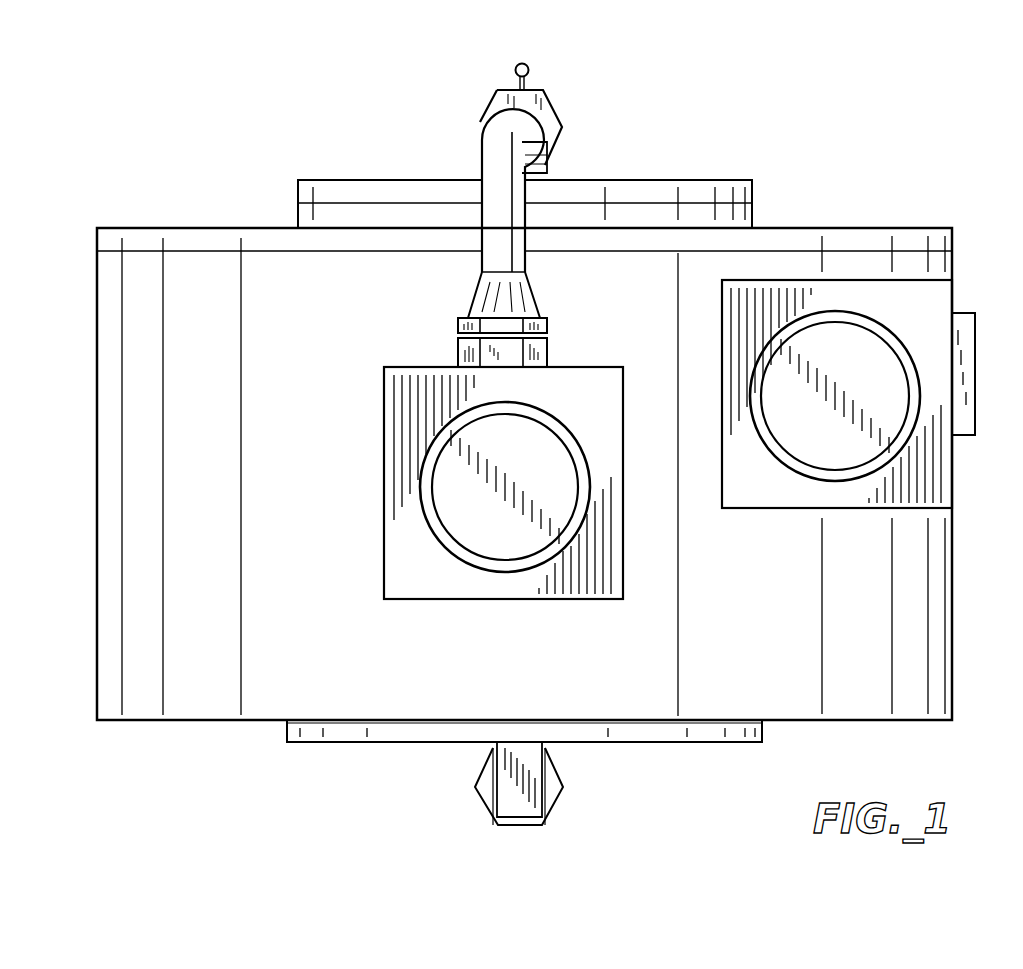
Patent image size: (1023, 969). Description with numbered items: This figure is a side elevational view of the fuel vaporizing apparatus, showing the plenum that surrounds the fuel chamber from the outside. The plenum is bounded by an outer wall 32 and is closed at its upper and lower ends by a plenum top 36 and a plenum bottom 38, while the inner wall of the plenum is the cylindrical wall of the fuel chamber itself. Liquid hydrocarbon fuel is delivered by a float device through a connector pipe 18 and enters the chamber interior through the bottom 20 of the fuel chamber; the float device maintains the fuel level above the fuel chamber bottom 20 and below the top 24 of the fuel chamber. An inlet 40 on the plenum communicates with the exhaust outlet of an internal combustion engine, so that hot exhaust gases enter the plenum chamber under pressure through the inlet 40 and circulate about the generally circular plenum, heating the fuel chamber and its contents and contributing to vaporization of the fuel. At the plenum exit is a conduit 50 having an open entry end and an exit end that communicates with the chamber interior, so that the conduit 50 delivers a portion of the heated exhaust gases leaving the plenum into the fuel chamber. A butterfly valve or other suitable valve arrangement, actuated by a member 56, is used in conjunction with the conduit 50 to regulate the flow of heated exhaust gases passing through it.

The connector pipe 18 is at (501, 797).
The bottom of the fuel chamber 20 is at (623, 743).
The top of the fuel chamber 24 is at (680, 178).
The outer wall 32 is at (953, 627).
The plenum top 36 is at (888, 223).
The plenum bottom 38 is at (205, 725).
The inlet 40 is at (860, 333).
The conduit 50 is at (493, 157).
The member 56 is at (526, 62).